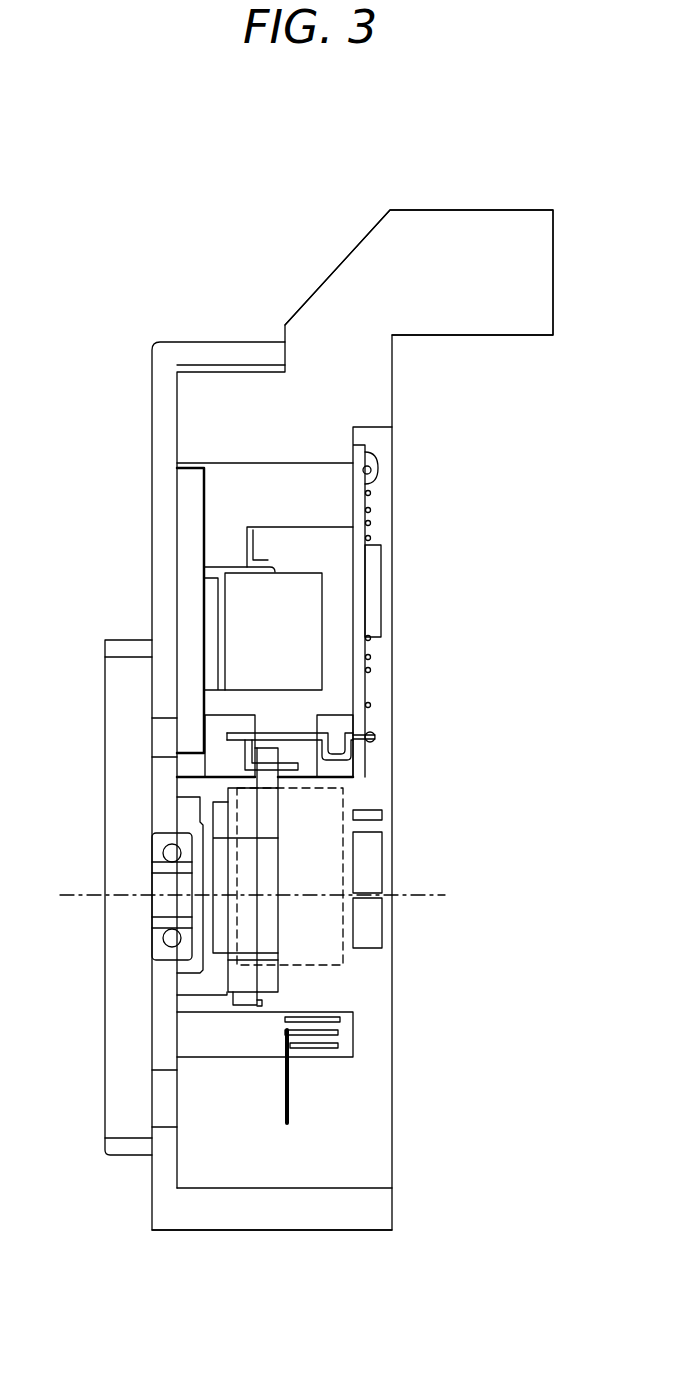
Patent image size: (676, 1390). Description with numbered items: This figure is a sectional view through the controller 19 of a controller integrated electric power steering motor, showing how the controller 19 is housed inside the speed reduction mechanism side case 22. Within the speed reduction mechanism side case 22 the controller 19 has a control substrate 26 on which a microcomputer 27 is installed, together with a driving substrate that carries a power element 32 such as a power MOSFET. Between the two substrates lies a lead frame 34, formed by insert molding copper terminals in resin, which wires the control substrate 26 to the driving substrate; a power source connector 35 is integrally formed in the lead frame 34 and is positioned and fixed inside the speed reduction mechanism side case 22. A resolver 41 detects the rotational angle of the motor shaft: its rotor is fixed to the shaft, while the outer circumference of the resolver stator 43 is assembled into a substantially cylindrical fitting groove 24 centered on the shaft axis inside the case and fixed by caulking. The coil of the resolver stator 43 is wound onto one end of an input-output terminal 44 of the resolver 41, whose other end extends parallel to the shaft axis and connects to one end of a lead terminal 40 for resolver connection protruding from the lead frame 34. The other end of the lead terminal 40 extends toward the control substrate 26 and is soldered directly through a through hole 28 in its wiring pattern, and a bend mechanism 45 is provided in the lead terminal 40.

The controller 19 is at (273, 1250).
The speed reduction mechanism side case 22 is at (205, 1180).
The fitting groove 24 is at (237, 1005).
The control substrate 26 is at (368, 487).
The microcomputer 27 is at (372, 558).
The through hole 28 is at (358, 738).
The power element 32 is at (213, 610).
The lead frame 34 is at (233, 475).
The power source connector 35 is at (469, 222).
The lead terminal for resolver connection 40 is at (273, 732).
The resolver 41 is at (285, 980).
The resolver stator 43 is at (245, 1005).
The input-output terminal 44 is at (290, 770).
The bend mechanism 45 is at (345, 752).